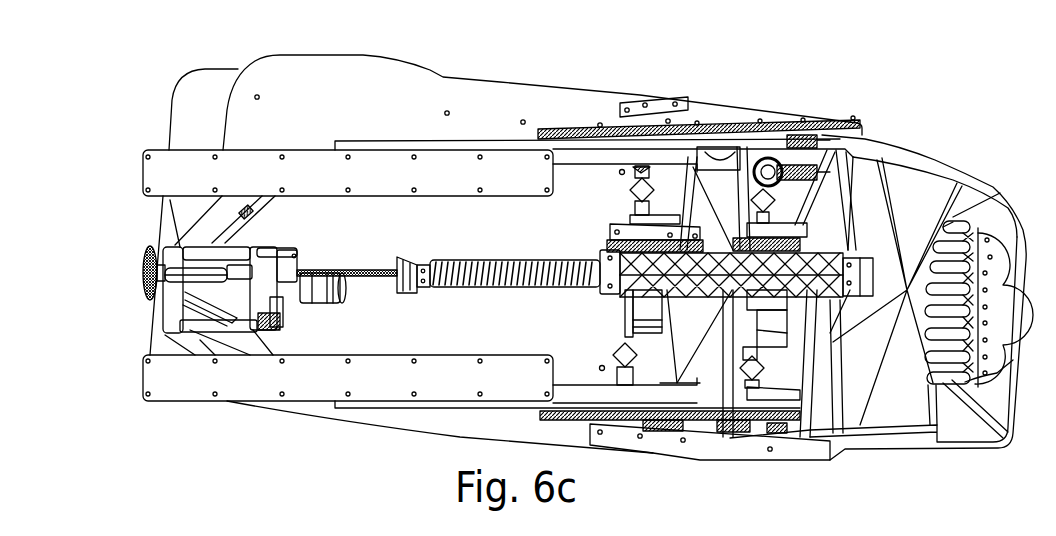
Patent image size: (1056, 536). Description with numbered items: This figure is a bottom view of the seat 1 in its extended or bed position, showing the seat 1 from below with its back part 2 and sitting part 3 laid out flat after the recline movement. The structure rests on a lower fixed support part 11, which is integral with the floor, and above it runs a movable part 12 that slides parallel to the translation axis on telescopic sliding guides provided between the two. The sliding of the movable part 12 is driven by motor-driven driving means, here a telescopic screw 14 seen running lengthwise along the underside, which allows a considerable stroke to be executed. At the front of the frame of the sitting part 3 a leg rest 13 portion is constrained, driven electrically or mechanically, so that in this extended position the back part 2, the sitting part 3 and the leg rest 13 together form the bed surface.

The seat 1 is at (784, 51).
The back part 2 is at (302, 66).
The sitting part 3 is at (810, 210).
The fixed support part 11 is at (190, 166).
The movable part 12 is at (728, 193).
The leg rest 13 is at (967, 180).
The telescopic screw 14 is at (484, 262).